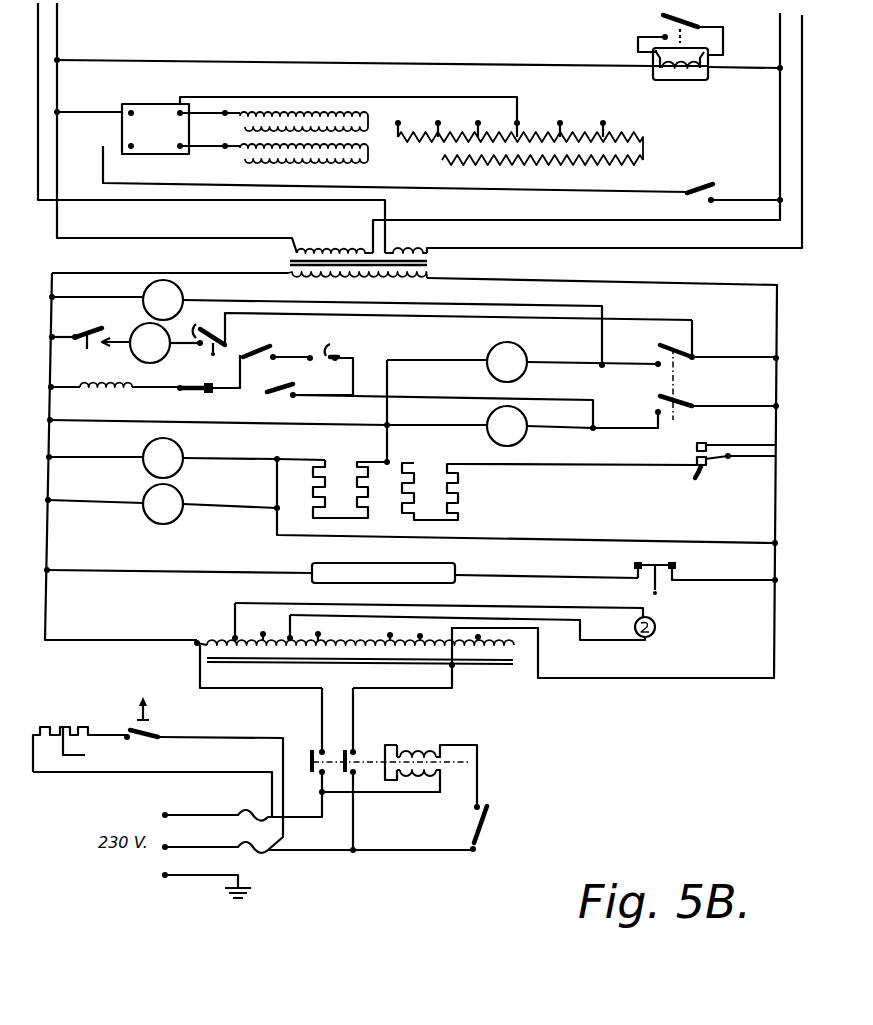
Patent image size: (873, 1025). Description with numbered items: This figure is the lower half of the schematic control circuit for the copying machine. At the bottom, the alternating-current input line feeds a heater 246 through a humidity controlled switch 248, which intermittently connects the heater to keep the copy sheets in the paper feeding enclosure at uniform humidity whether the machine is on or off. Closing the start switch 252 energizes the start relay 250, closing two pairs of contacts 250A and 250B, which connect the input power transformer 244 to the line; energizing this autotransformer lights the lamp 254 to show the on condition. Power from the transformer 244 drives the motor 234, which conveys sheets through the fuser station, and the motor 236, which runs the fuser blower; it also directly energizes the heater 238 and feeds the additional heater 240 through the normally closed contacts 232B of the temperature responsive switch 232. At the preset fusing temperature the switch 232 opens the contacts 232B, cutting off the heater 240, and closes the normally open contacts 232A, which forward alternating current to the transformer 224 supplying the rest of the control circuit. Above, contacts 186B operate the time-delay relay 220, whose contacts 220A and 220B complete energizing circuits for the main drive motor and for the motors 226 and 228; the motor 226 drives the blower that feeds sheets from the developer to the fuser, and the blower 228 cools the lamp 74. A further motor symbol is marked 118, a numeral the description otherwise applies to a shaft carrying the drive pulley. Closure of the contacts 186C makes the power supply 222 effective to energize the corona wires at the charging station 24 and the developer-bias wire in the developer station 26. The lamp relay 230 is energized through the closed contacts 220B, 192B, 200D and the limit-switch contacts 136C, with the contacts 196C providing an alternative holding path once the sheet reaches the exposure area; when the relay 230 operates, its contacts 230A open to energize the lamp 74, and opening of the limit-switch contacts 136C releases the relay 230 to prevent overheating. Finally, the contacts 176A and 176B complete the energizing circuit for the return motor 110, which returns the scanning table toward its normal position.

The power supply 222 is at (148, 90).
The charging station 24 is at (240, 179).
The developer station 26 is at (604, 117).
The relay 220 is at (706, 79).
The contacts 186B is at (653, 40).
The contacts 186C is at (718, 191).
The transformer 224 is at (340, 238).
The motor 226 is at (184, 299).
The contacts 176A is at (106, 322).
The return motor 110 is at (145, 357).
The contacts 176B is at (439, 332).
The lamp relay 230 is at (99, 381).
The limit switch contacts 136C is at (193, 384).
The contacts 200D is at (285, 343).
The contacts 192B is at (328, 345).
The contacts 196C is at (287, 397).
The blower motor 228 is at (493, 348).
The contacts 220A is at (656, 355).
The contacts 220B is at (657, 410).
The shaft 118 is at (515, 432).
The motor 234 is at (184, 450).
The motor 236 is at (184, 497).
The heater 238 is at (327, 470).
The heater 240 is at (440, 472).
The contacts 232A is at (697, 443).
The temperature responsive switch 232 is at (684, 458).
The contacts 232B is at (722, 475).
The lamp 74 is at (400, 556).
The contacts 230A is at (636, 572).
The lamp 254 is at (657, 627).
The input power transformer 244 is at (222, 626).
The heater 246 is at (70, 727).
The humidity controlled switch 248 is at (125, 731).
The contacts 250A is at (310, 750).
The contacts 250B is at (352, 750).
The start relay 250 is at (437, 747).
The start switch 252 is at (492, 805).